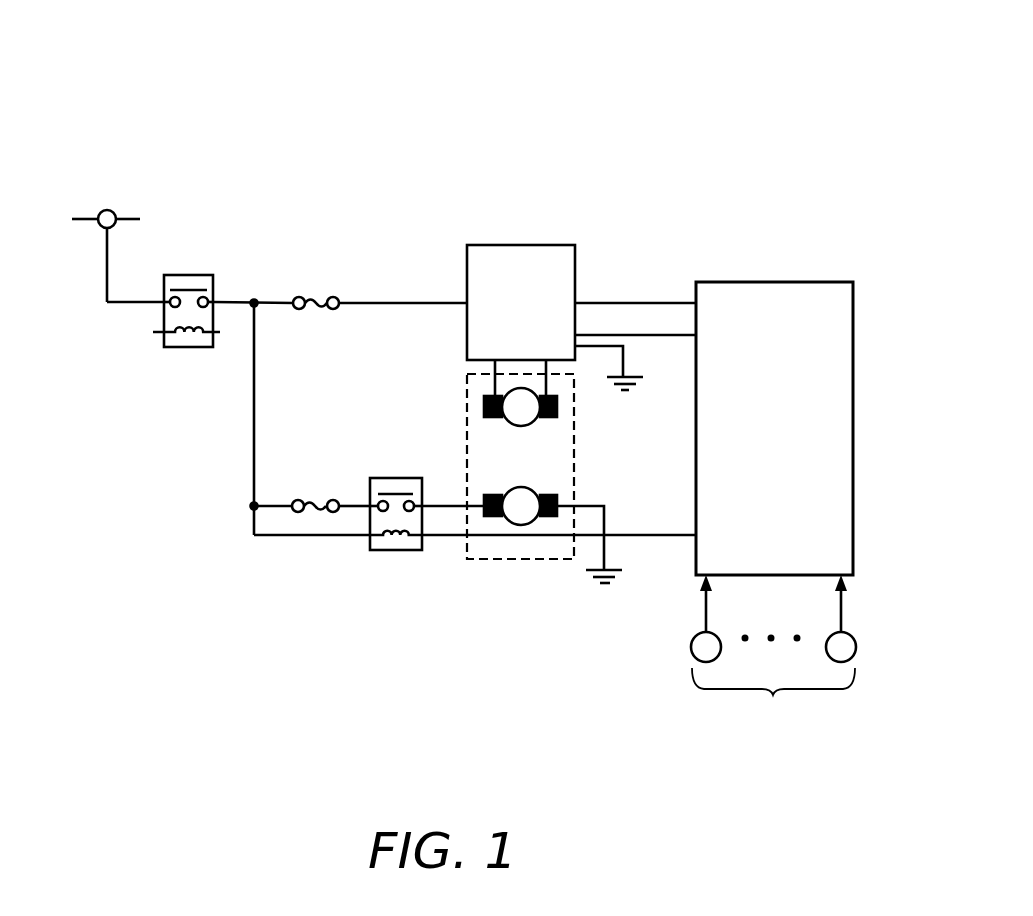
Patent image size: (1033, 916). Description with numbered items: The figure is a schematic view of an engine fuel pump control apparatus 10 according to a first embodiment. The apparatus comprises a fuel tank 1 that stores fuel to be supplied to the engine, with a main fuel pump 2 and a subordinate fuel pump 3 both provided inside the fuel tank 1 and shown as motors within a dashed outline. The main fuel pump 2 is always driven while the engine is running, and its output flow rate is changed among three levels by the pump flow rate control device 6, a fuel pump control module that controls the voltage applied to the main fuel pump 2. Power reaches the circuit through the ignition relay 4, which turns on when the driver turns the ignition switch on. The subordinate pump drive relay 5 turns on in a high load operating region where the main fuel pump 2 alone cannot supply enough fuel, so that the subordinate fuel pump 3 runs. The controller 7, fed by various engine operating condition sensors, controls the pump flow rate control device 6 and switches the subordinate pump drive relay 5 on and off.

The engine fuel pump control apparatus 10 is at (101, 86).
The fuel tank 1 is at (575, 424).
The main fuel pump 2 is at (484, 405).
The subordinate fuel pump 3 is at (557, 500).
The ignition relay 4 is at (200, 275).
The subordinate pump drive relay 5 is at (392, 478).
The pump flow rate control device 6 is at (555, 245).
The controller 7 is at (853, 310).